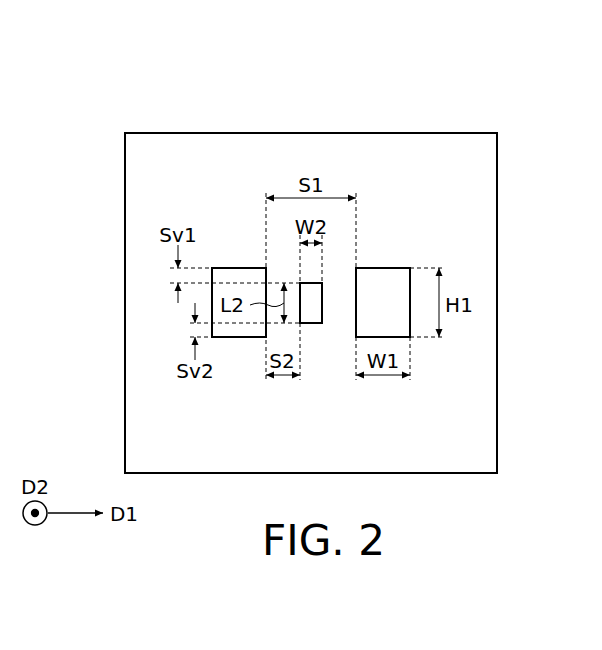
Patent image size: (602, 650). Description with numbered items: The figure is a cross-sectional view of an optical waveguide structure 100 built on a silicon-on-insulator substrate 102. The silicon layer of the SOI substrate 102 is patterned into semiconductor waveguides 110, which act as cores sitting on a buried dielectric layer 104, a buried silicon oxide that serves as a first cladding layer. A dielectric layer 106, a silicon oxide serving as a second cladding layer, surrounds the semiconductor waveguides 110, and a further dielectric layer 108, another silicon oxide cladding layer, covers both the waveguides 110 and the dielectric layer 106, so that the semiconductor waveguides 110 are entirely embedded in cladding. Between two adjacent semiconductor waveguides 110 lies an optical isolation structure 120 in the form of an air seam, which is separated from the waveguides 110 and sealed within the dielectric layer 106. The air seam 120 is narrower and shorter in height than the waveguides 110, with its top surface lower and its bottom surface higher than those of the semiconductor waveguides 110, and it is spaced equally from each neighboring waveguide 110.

The optical waveguide structure 100 is at (514, 68).
The silicon-on-insulator substrate 102 is at (120, 268).
The buried dielectric layer 104 is at (503, 337).
The dielectric layer 106 is at (503, 268).
The dielectric layer 108 is at (503, 133).
The semiconductor waveguide 110 is at (238, 268).
The optical isolation structure 120 is at (311, 312).